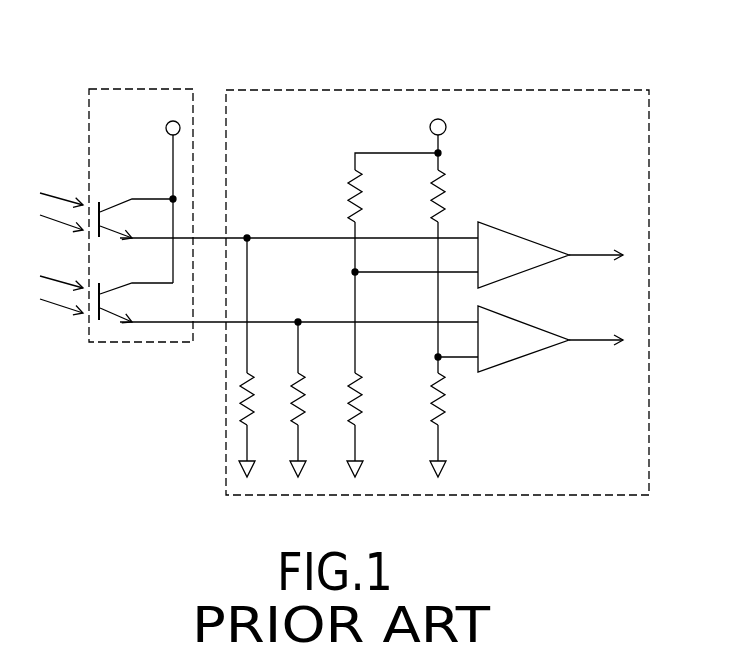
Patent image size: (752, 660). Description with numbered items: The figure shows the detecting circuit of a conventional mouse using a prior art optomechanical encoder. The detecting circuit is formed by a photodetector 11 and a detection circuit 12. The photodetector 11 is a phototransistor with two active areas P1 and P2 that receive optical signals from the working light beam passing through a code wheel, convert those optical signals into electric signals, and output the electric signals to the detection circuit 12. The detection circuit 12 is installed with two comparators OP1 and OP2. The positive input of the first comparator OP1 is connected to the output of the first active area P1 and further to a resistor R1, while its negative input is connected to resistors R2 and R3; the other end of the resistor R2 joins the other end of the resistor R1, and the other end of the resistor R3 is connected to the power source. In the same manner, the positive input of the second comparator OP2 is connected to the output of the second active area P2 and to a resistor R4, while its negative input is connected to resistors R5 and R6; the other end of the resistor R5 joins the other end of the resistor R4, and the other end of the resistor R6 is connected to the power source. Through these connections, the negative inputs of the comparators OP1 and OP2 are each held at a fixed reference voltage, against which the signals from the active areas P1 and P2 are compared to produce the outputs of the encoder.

The photodetector 11 is at (128, 100).
The detection circuit 12 is at (328, 107).
The first active area P1 is at (299, 228).
The second active area P2 is at (299, 312).
The resistor R1 is at (259, 399).
The resistor R2 is at (367, 399).
The resistor R3 is at (368, 196).
The resistor R4 is at (310, 399).
The resistor R5 is at (450, 399).
The resistor R6 is at (451, 196).
The first comparator OP1 is at (520, 243).
The second comparator OP2 is at (535, 343).